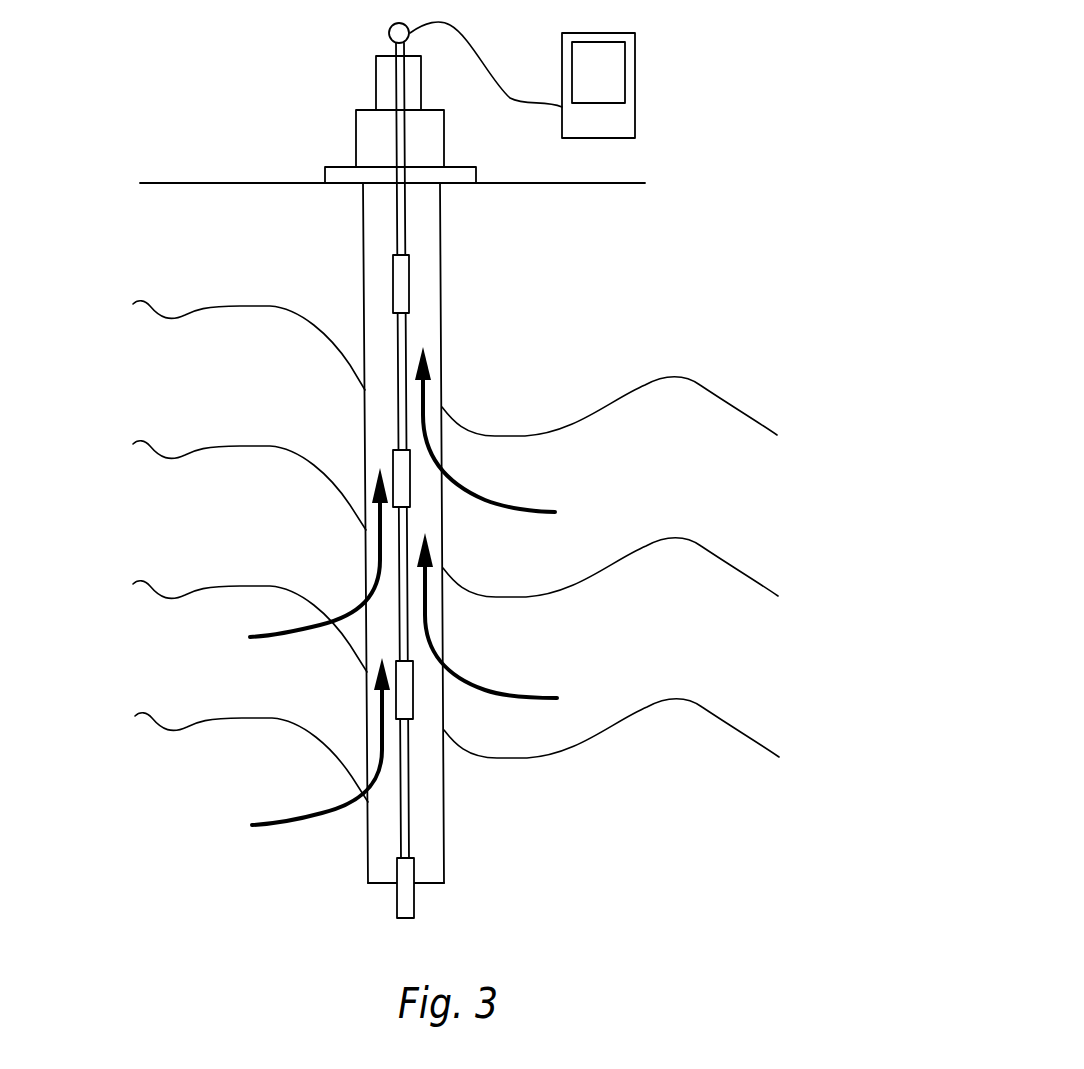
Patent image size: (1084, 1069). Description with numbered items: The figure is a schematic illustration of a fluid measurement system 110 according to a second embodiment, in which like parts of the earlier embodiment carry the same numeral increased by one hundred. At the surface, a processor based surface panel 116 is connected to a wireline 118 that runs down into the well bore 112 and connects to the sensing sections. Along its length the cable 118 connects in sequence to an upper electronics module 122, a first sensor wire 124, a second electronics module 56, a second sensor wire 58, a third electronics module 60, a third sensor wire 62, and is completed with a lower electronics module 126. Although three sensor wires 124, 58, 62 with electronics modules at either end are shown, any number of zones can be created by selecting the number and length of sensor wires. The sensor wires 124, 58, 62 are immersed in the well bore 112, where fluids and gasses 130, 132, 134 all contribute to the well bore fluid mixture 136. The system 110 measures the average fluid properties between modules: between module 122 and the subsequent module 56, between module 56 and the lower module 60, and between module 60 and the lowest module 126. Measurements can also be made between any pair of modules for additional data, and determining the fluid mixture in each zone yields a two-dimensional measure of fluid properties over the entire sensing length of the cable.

The fluid measurement system 110 is at (244, 270).
The well bore 112 is at (442, 230).
The processor based surface panel 116 is at (612, 68).
The wireline 118 is at (398, 208).
The upper electronics module 122 is at (403, 275).
The first sensor wire 124 is at (402, 400).
The lower electronics module 126 is at (407, 898).
The fluids and gasses 130 is at (199, 826).
The fluids and gasses 132 is at (199, 681).
The fluids and gasses 134 is at (196, 536).
The well bore fluid mixture 136 is at (432, 325).
The second electronics module 56 is at (403, 468).
The second sensor wire 58 is at (403, 593).
The third electronics module 60 is at (407, 677).
The third sensor wire 62 is at (406, 788).